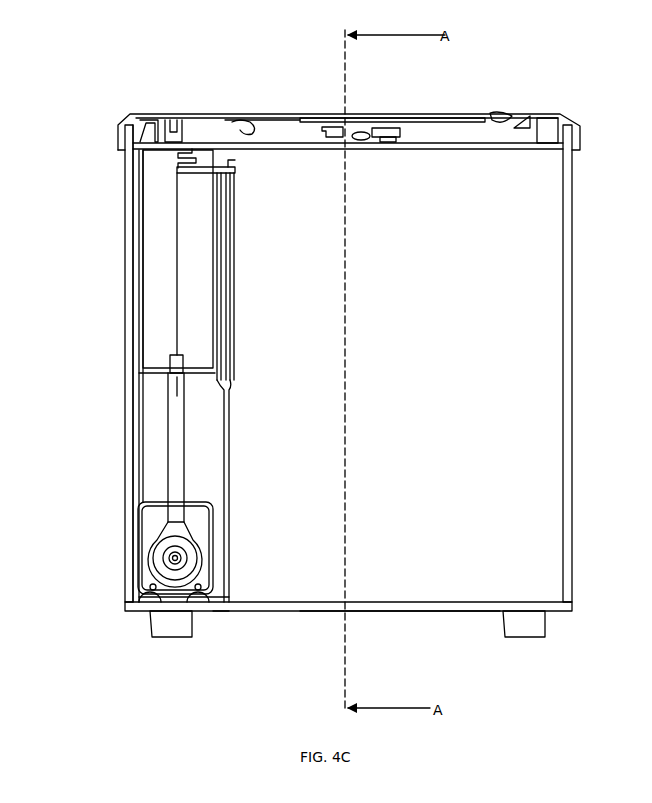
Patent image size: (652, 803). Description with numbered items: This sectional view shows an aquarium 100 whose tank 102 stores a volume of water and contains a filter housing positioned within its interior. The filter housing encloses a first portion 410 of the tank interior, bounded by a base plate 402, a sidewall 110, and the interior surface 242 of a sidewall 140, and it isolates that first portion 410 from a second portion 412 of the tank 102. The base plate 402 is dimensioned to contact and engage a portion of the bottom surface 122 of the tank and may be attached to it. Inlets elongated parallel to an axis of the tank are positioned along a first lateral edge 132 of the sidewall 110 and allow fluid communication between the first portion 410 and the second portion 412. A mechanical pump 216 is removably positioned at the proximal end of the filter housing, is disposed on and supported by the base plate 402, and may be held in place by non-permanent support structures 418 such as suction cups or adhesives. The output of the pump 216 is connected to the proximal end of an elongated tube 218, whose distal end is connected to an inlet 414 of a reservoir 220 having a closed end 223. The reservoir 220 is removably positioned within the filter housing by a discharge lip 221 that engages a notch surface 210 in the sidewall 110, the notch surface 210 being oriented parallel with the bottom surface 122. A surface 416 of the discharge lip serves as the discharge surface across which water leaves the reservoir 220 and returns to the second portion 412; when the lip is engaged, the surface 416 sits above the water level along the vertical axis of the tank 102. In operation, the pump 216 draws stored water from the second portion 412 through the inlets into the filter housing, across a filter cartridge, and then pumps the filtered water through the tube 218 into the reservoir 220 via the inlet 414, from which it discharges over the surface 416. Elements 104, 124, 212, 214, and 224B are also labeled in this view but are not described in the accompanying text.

The apparatus 100 is at (577, 61).
The tank 102 is at (575, 240).
The feet 104 is at (166, 633).
The sidewall 110 is at (229, 411).
The bottom surface 122 is at (420, 601).
The bottom surface 124 is at (402, 612).
The first lateral edge 132 is at (230, 602).
The sidewall 140 is at (133, 455).
The notch surface 210 is at (236, 174).
The top cover 212 is at (302, 108).
The rod 214 is at (430, 118).
The pump 216 is at (205, 528).
The elongated tube 218 is at (184, 448).
The reservoir 220 is at (207, 327).
The discharge lip 221 is at (190, 176).
The closed end 223 is at (190, 150).
The latch 224B is at (393, 141).
The interior surface 242 is at (140, 452).
The base plate 402 is at (225, 606).
The first portion 410 is at (145, 394).
The second portion 412 is at (499, 440).
The inlet 414 is at (188, 360).
The surface 416 is at (211, 171).
The non-permanent support structures 418 is at (148, 598).